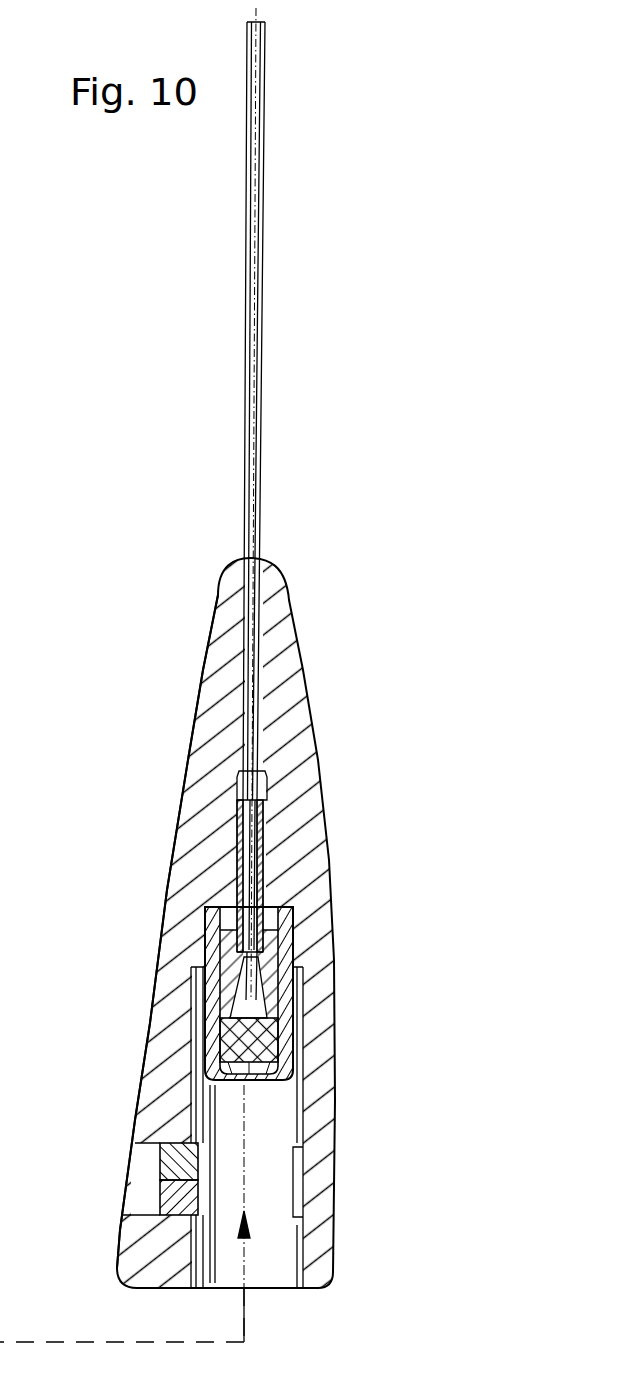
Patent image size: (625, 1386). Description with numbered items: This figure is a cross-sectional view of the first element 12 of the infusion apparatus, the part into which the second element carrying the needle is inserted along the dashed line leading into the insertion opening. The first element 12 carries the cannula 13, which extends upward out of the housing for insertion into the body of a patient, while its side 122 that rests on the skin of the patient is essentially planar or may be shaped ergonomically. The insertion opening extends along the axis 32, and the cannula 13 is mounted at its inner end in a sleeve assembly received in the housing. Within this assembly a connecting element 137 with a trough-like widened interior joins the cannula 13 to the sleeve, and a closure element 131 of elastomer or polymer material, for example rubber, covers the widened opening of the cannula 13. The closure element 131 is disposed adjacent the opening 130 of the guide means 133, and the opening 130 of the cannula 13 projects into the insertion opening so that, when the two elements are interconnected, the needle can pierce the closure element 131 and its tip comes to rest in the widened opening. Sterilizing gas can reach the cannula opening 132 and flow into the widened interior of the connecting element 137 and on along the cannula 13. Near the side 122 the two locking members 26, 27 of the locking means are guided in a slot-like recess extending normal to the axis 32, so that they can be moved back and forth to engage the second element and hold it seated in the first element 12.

The first element 12 is at (312, 704).
The side of the first element 122 is at (189, 746).
The cannula 13 is at (265, 426).
The opening of the cannula 130 is at (268, 1082).
The cannula opening 132 is at (290, 905).
The connecting element 137 is at (287, 948).
The closure element 131 is at (258, 1037).
The guide means 133 is at (278, 1062).
The axis of the insertion opening 32 is at (300, 967).
The locking member 27 is at (160, 1165).
The locking member 26 is at (160, 1198).